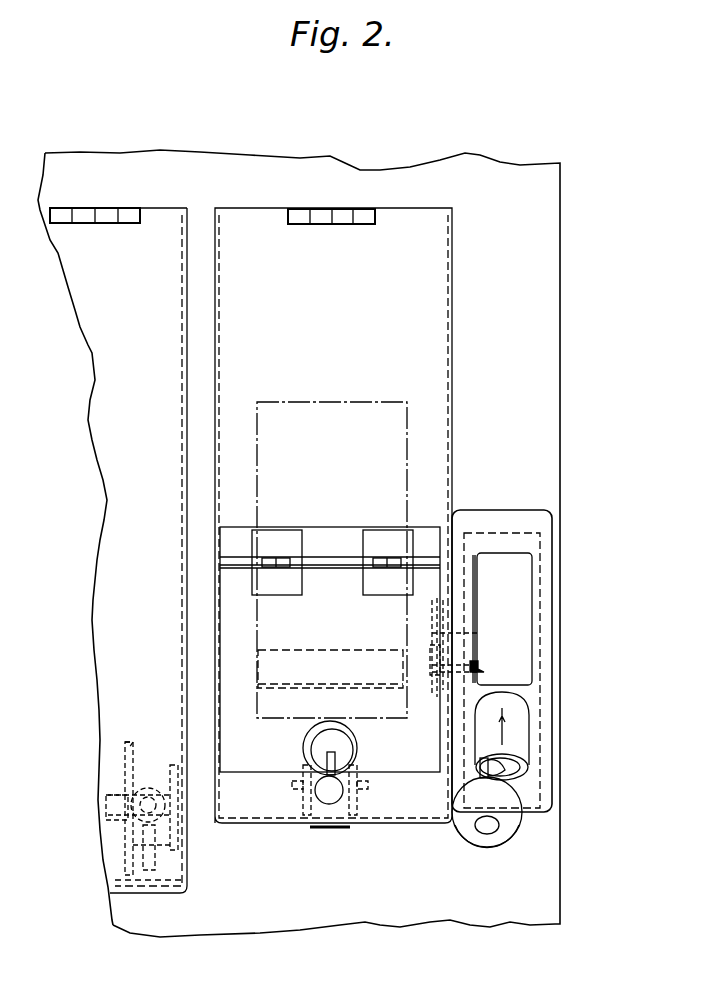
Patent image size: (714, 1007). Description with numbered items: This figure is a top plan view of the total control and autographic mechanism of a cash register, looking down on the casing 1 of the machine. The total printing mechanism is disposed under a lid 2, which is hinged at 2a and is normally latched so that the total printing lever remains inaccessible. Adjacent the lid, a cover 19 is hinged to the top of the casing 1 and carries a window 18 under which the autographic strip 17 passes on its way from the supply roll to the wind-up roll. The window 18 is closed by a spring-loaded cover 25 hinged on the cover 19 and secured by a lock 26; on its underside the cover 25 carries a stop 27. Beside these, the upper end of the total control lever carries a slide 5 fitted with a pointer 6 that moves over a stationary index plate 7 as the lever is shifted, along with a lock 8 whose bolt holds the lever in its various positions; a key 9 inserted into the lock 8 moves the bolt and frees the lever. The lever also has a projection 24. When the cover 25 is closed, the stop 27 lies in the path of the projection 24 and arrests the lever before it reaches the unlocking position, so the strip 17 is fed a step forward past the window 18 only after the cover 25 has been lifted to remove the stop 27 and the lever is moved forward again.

The casing 1 is at (523, 403).
The lid 2 is at (127, 500).
The hinge 2a is at (80, 212).
The cover 19 is at (428, 327).
The autographic strip 17 is at (257, 468).
The window 18 is at (336, 650).
The stop 27 is at (432, 610).
The projection 24 is at (432, 680).
The spring-loaded cover 25 is at (330, 649).
The lock 26 is at (340, 757).
The slide 5 is at (540, 740).
The index plate 7 is at (505, 596).
The pointer 6 is at (520, 651).
The lock 8 is at (505, 770).
The key 9 is at (482, 836).